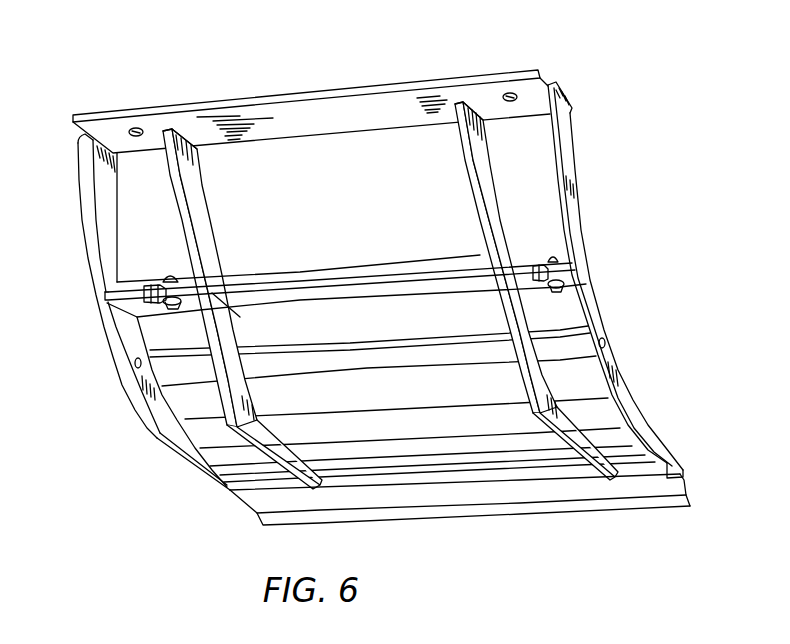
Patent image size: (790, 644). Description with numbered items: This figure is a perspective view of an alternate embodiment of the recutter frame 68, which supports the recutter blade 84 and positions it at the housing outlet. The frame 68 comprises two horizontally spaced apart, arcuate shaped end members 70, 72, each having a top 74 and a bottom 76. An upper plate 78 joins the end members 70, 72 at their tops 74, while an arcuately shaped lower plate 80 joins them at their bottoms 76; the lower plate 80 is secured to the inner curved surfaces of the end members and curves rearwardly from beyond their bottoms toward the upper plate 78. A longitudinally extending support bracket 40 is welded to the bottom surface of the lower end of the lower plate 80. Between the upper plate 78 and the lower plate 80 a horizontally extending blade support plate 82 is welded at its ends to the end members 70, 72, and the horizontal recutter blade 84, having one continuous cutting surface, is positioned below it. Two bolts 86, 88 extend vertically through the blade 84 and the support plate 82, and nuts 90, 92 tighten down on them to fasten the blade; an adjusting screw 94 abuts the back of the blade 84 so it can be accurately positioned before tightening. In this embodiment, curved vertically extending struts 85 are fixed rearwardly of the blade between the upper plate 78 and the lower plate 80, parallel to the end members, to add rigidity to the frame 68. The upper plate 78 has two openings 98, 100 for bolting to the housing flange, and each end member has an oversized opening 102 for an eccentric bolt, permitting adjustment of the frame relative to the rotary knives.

The support bracket 40 is at (585, 512).
The frame 68 is at (165, 411).
The end member 70 is at (584, 267).
The end member 72 is at (123, 327).
The top 74 is at (93, 188).
The bottom 76 is at (190, 447).
The upper plate 78 is at (298, 106).
The lower plate 80 is at (318, 381).
The blade support plate 82 is at (375, 268).
The recutter blade 84 is at (420, 281).
The strut 85 is at (198, 192).
The bolt 86 is at (177, 310).
The bolt 88 is at (557, 291).
The nut 90 is at (172, 270).
The nut 92 is at (550, 258).
The adjusting screw 94 is at (148, 287).
The opening 98 is at (137, 127).
The opening 100 is at (511, 92).
The opening 102 is at (134, 364).